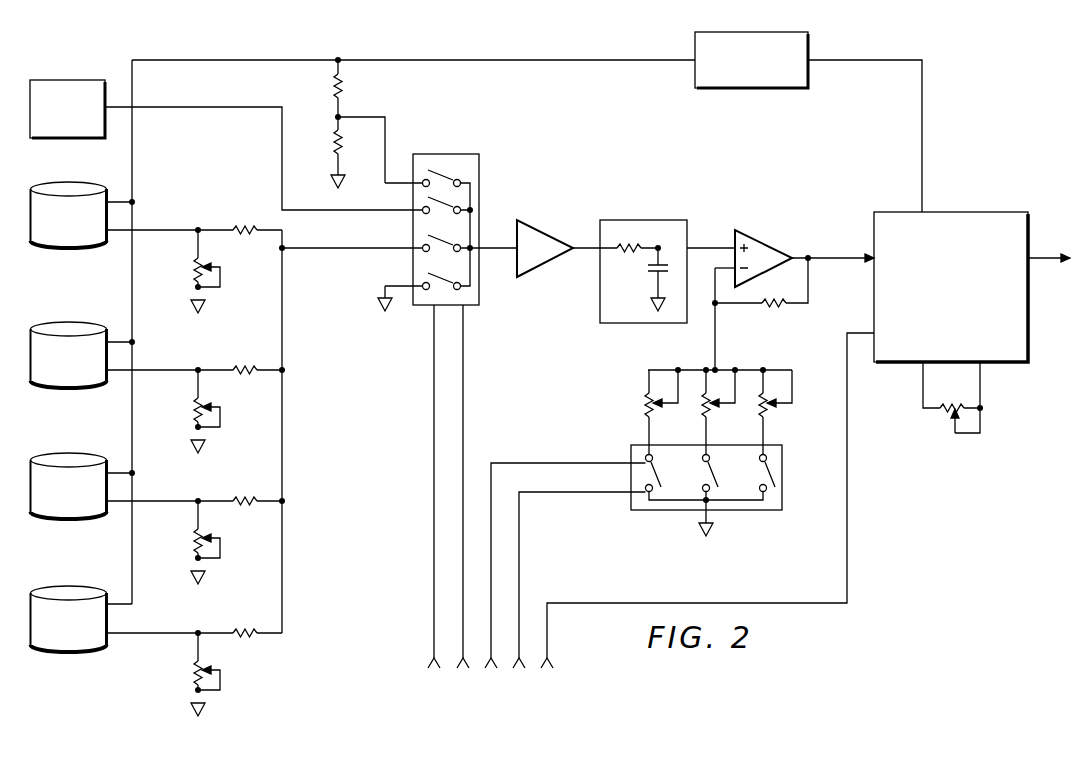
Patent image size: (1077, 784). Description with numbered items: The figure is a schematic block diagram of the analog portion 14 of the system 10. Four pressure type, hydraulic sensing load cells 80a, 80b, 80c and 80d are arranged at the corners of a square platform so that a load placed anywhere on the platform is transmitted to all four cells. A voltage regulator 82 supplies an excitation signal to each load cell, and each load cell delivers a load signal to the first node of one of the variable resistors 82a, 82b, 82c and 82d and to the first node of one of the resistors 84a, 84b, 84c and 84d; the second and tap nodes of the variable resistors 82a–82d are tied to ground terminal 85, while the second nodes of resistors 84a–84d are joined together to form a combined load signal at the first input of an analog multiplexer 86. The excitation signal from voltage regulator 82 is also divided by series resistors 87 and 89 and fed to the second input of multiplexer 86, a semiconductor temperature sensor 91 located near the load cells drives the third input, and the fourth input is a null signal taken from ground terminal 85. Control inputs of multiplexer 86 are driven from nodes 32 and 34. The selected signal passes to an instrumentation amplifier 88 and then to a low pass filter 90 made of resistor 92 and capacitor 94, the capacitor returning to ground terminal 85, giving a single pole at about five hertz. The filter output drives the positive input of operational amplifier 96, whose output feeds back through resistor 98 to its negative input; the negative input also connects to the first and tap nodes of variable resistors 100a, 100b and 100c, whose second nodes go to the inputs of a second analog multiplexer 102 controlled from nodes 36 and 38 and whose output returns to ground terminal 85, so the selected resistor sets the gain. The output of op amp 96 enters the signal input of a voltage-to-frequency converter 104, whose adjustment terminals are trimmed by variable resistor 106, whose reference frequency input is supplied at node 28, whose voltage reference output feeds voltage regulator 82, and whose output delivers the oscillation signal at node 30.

The system 10 is at (959, 558).
The analog portion 14 is at (341, 550).
The node 28 is at (549, 672).
The node 30 is at (1060, 266).
The node 32 is at (431, 672).
The node 34 is at (462, 672).
The node 36 is at (491, 672).
The node 38 is at (520, 672).
The load cell 80a is at (84, 236).
The load cell 80b is at (84, 374).
The load cell 80c is at (84, 507).
The load cell 80d is at (84, 640).
The voltage regulator 82 is at (790, 88).
The variable resistor 82a is at (194, 264).
The variable resistor 82b is at (194, 404).
The variable resistor 82c is at (196, 535).
The variable resistor 82d is at (196, 667).
The resistor 84a is at (244, 234).
The resistor 84b is at (244, 374).
The resistor 84c is at (244, 505).
The resistor 84d is at (244, 637).
The ground terminal 85 is at (205, 306).
The analog multiplexer 86 is at (479, 301).
The resistor 87 is at (343, 86).
The amplifier 88 is at (543, 230).
The resistor 89 is at (332, 143).
The low pass filter 90 is at (648, 253).
The temperature sensor 91 is at (97, 138).
The resistor 92 is at (627, 254).
The capacitor 94 is at (648, 270).
The operational amplifier 96 is at (770, 247).
The resistor 98 is at (779, 307).
The variable resistor 100a is at (648, 408).
The variable resistor 100b is at (706, 408).
The variable resistor 100c is at (763, 408).
The analog multiplexer 102 is at (757, 510).
The voltage-to-frequency converter 104 is at (990, 212).
The variable resistor 106 is at (947, 414).